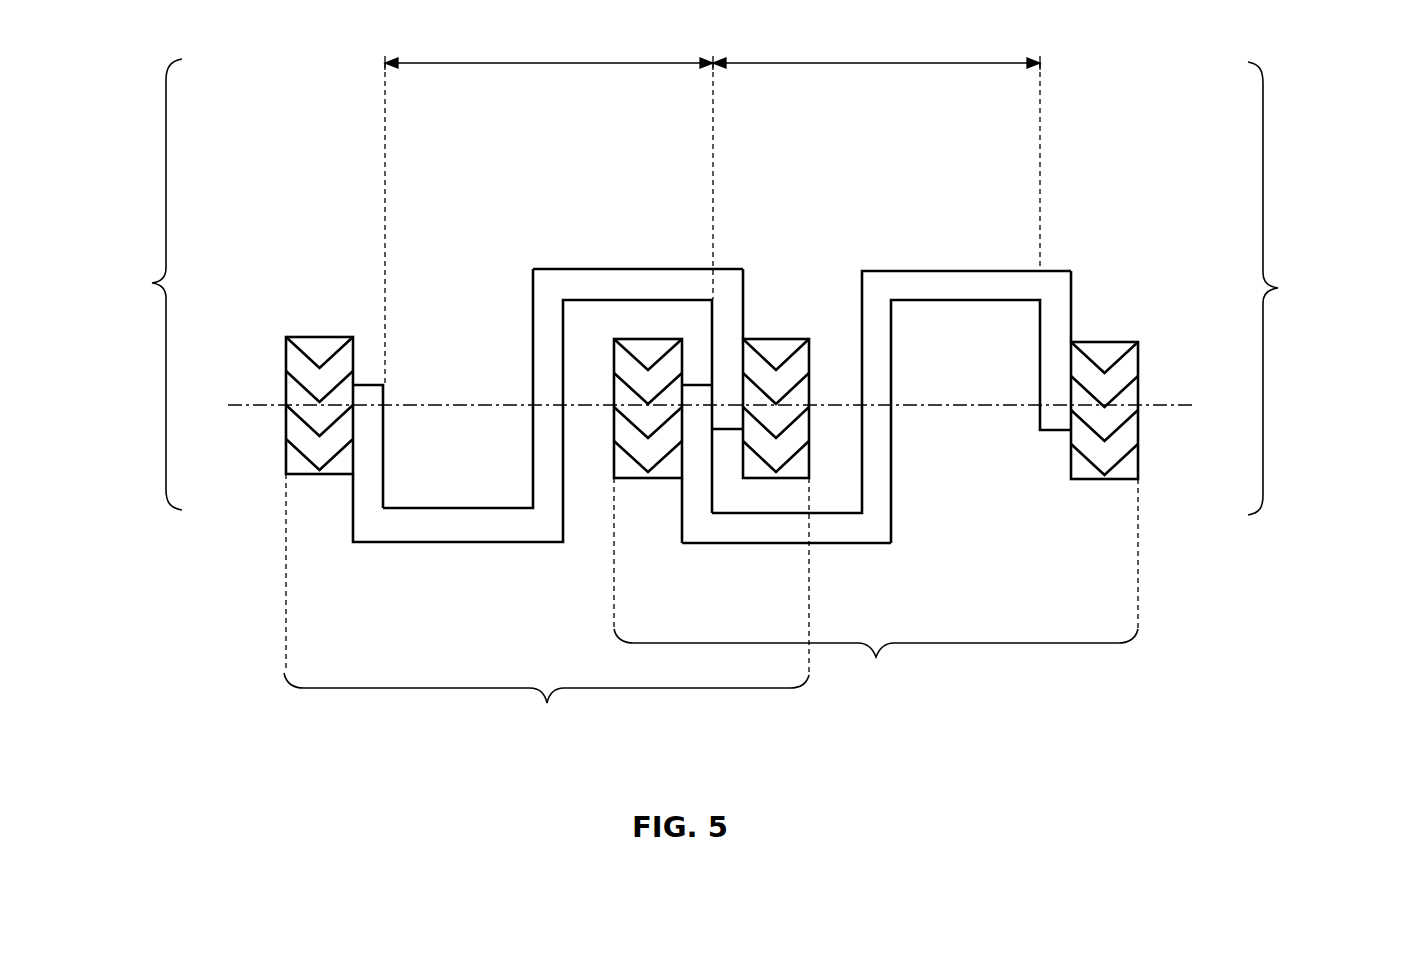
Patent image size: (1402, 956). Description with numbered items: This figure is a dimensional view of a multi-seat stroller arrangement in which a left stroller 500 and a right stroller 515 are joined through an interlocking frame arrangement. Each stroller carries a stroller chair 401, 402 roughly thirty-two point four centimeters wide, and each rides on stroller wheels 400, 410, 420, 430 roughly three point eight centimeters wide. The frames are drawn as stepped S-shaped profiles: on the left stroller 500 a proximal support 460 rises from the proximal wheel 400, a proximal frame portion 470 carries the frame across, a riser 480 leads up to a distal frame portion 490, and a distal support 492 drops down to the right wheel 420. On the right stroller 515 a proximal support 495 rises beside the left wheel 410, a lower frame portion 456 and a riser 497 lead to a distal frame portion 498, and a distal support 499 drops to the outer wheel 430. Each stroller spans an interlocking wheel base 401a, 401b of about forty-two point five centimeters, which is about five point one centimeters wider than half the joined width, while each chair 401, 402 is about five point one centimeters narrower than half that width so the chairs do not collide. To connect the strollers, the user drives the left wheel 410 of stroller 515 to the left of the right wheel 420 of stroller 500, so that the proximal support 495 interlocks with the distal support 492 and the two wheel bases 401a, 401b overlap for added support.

The stroller wheel 400 is at (286, 421).
The stroller wheel 410 is at (655, 339).
The stroller wheel 420 is at (765, 339).
The stroller wheel 430 is at (1138, 424).
The proximal support 460 is at (383, 474).
The proximal frame portion 470 is at (463, 542).
The riser section 480 is at (533, 320).
The distal frame portion 490 is at (600, 268).
The distal support 492 is at (745, 285).
The proximal support 495 is at (682, 490).
The lower shaft section 456 is at (783, 543).
The riser member 497 is at (891, 475).
The distal frame portion 498 is at (940, 271).
The distal support 499 is at (1071, 311).
The stroller chair 401 is at (607, 63).
The stroller chair 402 is at (870, 63).
The interlocking wheel base 401a is at (546, 705).
The interlocking wheel base 401b is at (876, 662).
The stroller 500 is at (135, 243).
The stroller 515 is at (1275, 251).